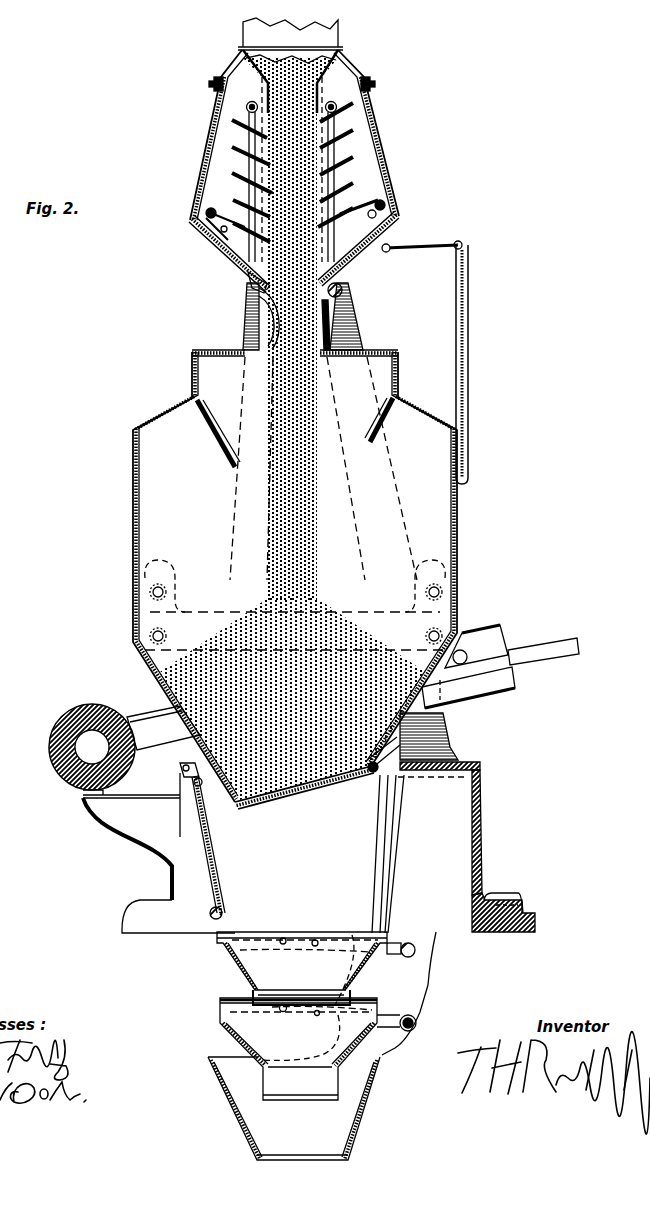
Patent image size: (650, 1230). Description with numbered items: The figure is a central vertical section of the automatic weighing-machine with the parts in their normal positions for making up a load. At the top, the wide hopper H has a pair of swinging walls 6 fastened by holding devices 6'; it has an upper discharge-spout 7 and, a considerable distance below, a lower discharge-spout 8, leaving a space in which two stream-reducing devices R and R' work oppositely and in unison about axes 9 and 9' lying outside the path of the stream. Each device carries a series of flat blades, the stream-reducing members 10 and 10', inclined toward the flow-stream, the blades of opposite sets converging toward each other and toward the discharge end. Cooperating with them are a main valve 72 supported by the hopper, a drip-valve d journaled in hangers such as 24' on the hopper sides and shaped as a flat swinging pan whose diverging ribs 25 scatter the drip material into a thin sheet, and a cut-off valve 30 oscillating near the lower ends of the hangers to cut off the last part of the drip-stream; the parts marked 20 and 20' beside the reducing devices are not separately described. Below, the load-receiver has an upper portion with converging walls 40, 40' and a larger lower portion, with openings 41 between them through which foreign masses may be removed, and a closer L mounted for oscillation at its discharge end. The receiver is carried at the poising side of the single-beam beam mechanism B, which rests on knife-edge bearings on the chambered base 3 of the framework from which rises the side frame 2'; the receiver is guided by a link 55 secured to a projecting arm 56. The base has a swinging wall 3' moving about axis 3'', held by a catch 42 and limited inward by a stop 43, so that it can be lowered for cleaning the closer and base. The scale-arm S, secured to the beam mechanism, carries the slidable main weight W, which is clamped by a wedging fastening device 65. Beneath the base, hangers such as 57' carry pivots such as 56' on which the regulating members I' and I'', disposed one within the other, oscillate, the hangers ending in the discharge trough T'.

The upper discharge-spout 7 is at (335, 72).
The hopper H is at (290, 135).
The swinging wall 6 is at (289, 135).
The holding device 6' is at (292, 80).
The axis of oscillation 9 is at (329, 169).
The axis of oscillation 9' is at (251, 169).
The stream-reducing members 10 is at (355, 163).
The stream-reducing members 10' is at (229, 181).
The stream-reducing device R is at (354, 175).
The stream-reducing device R' is at (230, 167).
The lever 20 is at (376, 194).
The lever 20' is at (211, 242).
The main valve 72 is at (238, 262).
The lower discharge-spout 8 is at (252, 282).
The hanger 24' is at (358, 254).
The cut-off valve 30 is at (256, 310).
The side frame 2' is at (236, 317).
The drip-valve d is at (349, 316).
The ribs 25 is at (335, 292).
The link 55 is at (432, 246).
The projecting arm 56 is at (441, 601).
The openings 41 is at (162, 428).
The converging wall 40 is at (209, 433).
The converging wall 40' is at (393, 424).
The load-discharger or closer L is at (335, 792).
The beam mechanism B is at (124, 749).
The catch 42 is at (180, 772).
The stop 43 is at (194, 786).
The swinging wall 3' is at (212, 844).
The axis 3'' is at (195, 916).
The chambered base 3 is at (309, 806).
The main weight W is at (476, 637).
The wedging fastening device 65 is at (467, 656).
The scale-arm S is at (500, 673).
The regulating member I' is at (302, 968).
The regulating member I'' is at (298, 1049).
The pivot 56' is at (396, 1010).
The hanger 57' is at (423, 993).
The discharge hopper or trough T' is at (294, 1108).